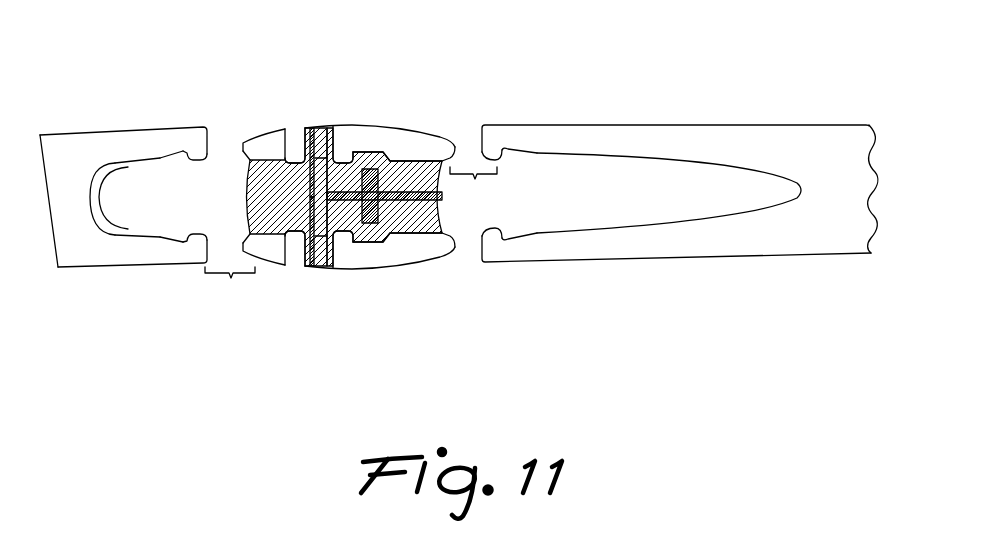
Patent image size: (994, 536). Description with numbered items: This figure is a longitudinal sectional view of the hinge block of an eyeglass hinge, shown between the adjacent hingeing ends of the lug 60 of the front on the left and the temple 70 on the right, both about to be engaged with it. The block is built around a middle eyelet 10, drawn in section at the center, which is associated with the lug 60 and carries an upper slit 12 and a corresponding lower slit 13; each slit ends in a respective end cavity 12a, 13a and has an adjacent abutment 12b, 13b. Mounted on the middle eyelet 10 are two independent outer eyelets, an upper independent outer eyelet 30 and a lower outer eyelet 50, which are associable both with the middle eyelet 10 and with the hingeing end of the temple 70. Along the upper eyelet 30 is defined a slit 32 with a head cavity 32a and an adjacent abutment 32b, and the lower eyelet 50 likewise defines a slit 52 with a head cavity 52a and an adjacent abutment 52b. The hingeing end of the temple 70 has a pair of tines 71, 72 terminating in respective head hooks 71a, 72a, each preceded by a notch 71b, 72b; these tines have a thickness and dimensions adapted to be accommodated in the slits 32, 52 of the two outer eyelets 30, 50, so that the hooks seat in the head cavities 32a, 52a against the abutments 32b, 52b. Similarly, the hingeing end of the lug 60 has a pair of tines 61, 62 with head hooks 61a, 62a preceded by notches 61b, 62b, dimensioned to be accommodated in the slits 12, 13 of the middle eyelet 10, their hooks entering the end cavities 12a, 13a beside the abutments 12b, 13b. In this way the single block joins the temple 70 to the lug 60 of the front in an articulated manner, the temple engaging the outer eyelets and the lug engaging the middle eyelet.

The middle eyelet 10 is at (289, 118).
The upper slit 12 is at (240, 150).
The end cavity 12a is at (290, 147).
The abutment 12b is at (273, 147).
The lower slit 13 is at (240, 243).
The end cavity 13a is at (290, 245).
The abutment 13b is at (275, 256).
The independent outer eyelet 30 is at (409, 116).
The slit 32 is at (423, 154).
The head cavity 32a is at (346, 155).
The abutment 32b is at (362, 148).
The lower outer eyelet 50 is at (405, 279).
The slit 52 is at (423, 238).
The head cavity 52a is at (348, 243).
The abutment 52b is at (362, 238).
The lug 60 is at (60, 217).
The tine 61 is at (127, 148).
The head hook 61a is at (198, 142).
The notch 61b is at (177, 150).
The tine 62 is at (182, 234).
The head hook 62a is at (197, 252).
The notch 62b is at (137, 238).
The temple 70 is at (828, 153).
The tine 71 is at (683, 142).
The head hook 71a is at (493, 143).
The notch 71b is at (513, 148).
The tine 72 is at (683, 250).
The head hook 72a is at (493, 253).
The notch 72b is at (513, 240).